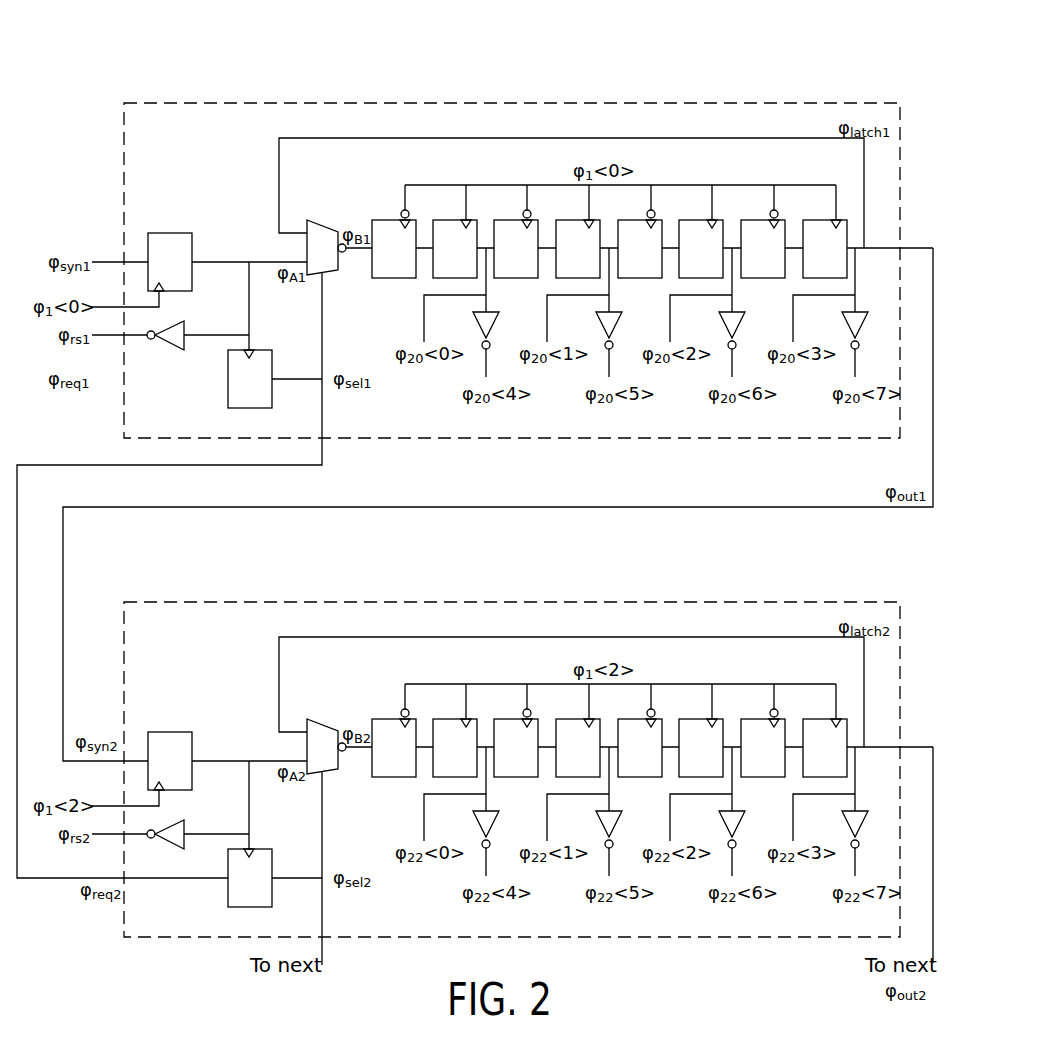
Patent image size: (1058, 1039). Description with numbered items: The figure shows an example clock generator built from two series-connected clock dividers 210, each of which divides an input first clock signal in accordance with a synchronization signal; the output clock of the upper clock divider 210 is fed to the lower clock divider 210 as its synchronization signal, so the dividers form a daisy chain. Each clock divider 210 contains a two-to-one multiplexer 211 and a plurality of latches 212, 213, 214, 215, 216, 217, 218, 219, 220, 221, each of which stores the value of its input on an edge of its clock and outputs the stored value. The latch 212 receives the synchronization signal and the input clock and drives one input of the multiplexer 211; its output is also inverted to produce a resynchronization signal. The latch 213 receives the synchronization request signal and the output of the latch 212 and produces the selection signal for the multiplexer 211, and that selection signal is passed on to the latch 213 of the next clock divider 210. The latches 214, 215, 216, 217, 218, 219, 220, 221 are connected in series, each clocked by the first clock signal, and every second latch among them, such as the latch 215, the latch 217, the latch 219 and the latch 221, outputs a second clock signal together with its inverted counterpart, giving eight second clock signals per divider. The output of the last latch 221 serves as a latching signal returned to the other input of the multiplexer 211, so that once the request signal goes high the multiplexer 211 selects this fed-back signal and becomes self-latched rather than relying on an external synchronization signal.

The clock divider 210 is at (124, 104).
The two-to-one multiplexer 211 is at (307, 220).
The latch 212 is at (167, 233).
The latch 213 is at (231, 350).
The latch 214 is at (385, 220).
The latch 215 is at (446, 220).
The latch 216 is at (507, 220).
The latch 217 is at (570, 220).
The latch 218 is at (631, 220).
The latch 219 is at (692, 220).
The latch 220 is at (754, 220).
The latch 221 is at (816, 220).